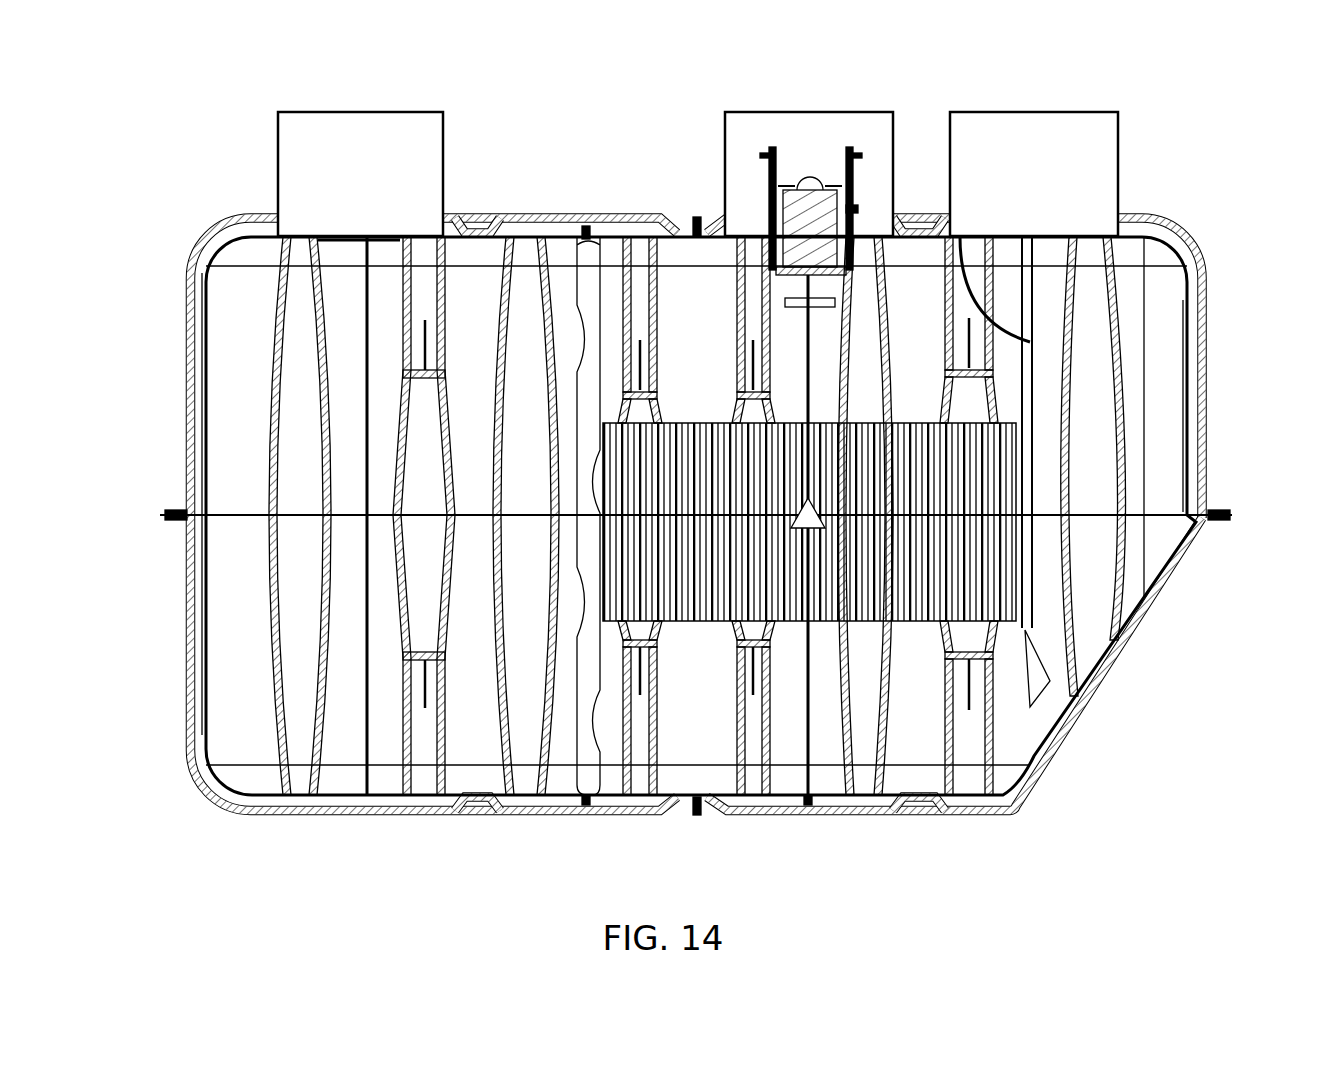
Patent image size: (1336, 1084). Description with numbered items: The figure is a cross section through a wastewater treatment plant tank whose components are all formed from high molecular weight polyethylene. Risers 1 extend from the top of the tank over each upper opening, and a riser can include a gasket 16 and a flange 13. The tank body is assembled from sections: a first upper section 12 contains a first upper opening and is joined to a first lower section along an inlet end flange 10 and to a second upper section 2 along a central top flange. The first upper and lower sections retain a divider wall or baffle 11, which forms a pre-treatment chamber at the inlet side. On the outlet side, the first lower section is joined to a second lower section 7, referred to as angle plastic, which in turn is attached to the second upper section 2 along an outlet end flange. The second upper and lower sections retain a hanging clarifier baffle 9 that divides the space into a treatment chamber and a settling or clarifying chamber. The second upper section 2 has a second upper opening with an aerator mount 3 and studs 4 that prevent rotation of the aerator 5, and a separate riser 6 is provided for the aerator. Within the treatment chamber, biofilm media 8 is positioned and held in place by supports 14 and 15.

The risers 1 is at (330, 112).
The second upper section 2 is at (1210, 383).
The aerator mount 3 is at (843, 235).
The studs 4 is at (855, 210).
The aerator 5 is at (795, 186).
The riser 6 is at (770, 155).
The second lower section 7 is at (992, 815).
The biofilm media 8 is at (808, 620).
The hanging clarifier baffle 9 is at (1025, 335).
The inlet end flange 10 is at (172, 522).
The divider wall or baffle 11 is at (578, 787).
The first upper section 12 is at (183, 345).
The flange 13 is at (275, 230).
The support 14 is at (640, 672).
The support 15 is at (985, 667).
The gasket 16 is at (443, 230).